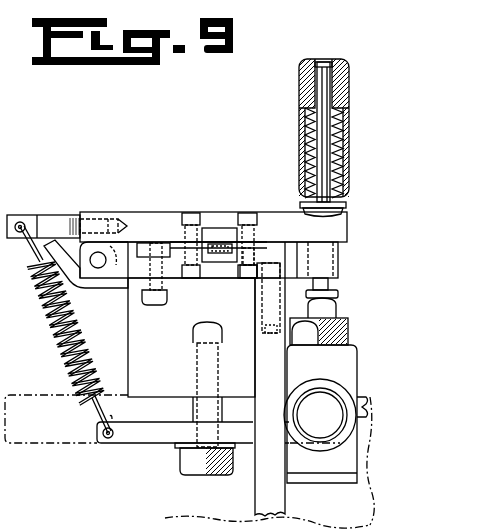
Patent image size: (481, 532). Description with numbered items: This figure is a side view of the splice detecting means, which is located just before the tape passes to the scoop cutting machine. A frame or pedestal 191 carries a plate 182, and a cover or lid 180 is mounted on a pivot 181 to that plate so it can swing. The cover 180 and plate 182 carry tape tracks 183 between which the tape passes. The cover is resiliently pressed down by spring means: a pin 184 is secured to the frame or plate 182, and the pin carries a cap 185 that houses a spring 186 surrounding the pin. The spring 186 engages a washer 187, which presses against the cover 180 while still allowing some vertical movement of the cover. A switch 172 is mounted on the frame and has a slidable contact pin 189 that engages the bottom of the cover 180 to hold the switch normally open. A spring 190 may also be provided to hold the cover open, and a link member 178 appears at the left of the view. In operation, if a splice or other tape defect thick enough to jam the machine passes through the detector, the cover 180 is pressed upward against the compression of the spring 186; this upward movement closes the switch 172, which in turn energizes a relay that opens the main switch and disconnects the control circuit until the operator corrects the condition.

The switch 172 is at (326, 380).
The link bar 178 is at (40, 189).
The cover 180 is at (158, 205).
The pivot 181 is at (100, 268).
The plate 182 is at (228, 278).
The tape tracks 183 is at (233, 252).
The pin 184 is at (322, 93).
The cap 185 is at (299, 70).
The spring 186 is at (312, 142).
The washer 187 is at (301, 207).
The slidable contact pin 189 is at (340, 263).
The spring 190 is at (62, 352).
The frame 191 is at (128, 333).